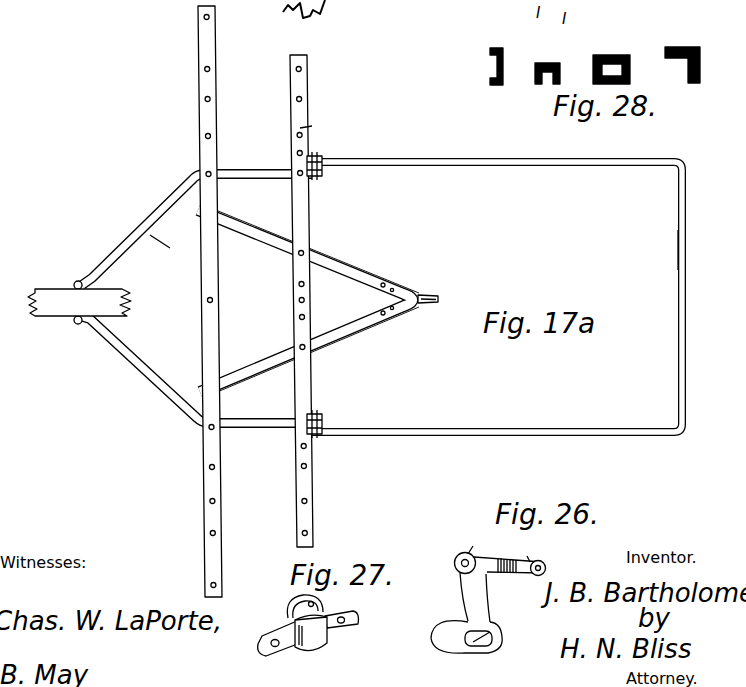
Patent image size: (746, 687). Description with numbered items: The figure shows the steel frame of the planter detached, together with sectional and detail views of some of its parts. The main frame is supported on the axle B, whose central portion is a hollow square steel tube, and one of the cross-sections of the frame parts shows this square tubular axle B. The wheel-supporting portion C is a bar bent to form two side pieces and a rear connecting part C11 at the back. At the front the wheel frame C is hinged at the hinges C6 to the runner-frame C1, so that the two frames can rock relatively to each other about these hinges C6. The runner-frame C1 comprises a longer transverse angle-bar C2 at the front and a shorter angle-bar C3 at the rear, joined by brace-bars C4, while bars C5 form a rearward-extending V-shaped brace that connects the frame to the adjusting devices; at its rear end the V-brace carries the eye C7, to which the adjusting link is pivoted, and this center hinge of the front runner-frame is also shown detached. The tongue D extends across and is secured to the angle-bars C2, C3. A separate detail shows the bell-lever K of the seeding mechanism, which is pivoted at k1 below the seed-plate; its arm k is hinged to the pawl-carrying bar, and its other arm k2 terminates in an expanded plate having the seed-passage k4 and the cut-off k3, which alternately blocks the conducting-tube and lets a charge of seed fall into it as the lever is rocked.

In FIG. 17a, the wheel-supporting frame portion C is at (496, 297).
In FIG. 17a, the runner-frame C1 is at (692, 250).
In FIG. 17a, the frame opening (C double prime) C11 is at (168, 237).
In FIG. 17a, the front transverse angle-bar C2 is at (222, 301).
In FIG. 17a, the rear angle-bar C3 is at (313, 301).
In FIG. 17a, the brace-bars C4 is at (196, 298).
In FIG. 17a, the V-shaped brace bars C5 is at (308, 301).
In FIG. 17a, the hinges C6 is at (329, 295).
In FIG. 17a, the eye C7 is at (428, 309).
In FIG. 27, the eye C7 is at (308, 629).
In FIG. 17a, the tongue D is at (79, 296).
In FIG. 28, the axle B is at (595, 61).
In FIG. 26, the bell-lever K is at (445, 567).
In FIG. 26, the pivot k1 is at (469, 541).
In FIG. 26, the arm k is at (525, 550).
In FIG. 26, the lever stem k2 is at (472, 597).
In FIG. 26, the cut-off k3 is at (457, 632).
In FIG. 26, the seed-passage k4 is at (482, 636).